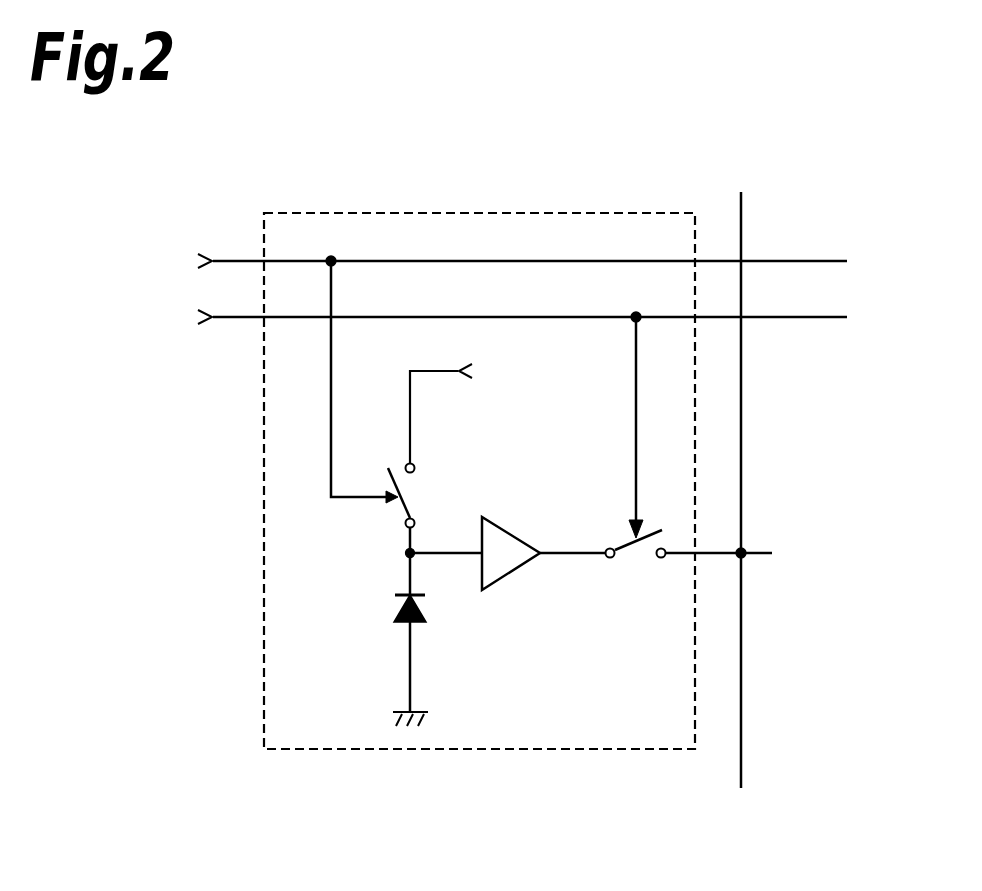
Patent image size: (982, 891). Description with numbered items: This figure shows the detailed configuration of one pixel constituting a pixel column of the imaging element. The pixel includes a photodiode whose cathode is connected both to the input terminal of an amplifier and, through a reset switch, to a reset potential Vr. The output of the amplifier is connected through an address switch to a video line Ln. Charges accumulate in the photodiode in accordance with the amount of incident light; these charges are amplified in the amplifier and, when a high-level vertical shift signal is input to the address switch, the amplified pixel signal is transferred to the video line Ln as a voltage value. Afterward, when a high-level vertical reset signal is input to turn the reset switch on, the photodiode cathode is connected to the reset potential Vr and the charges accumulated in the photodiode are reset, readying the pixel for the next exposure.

The reset potential Vr is at (464, 407).
The video line Ln is at (741, 745).